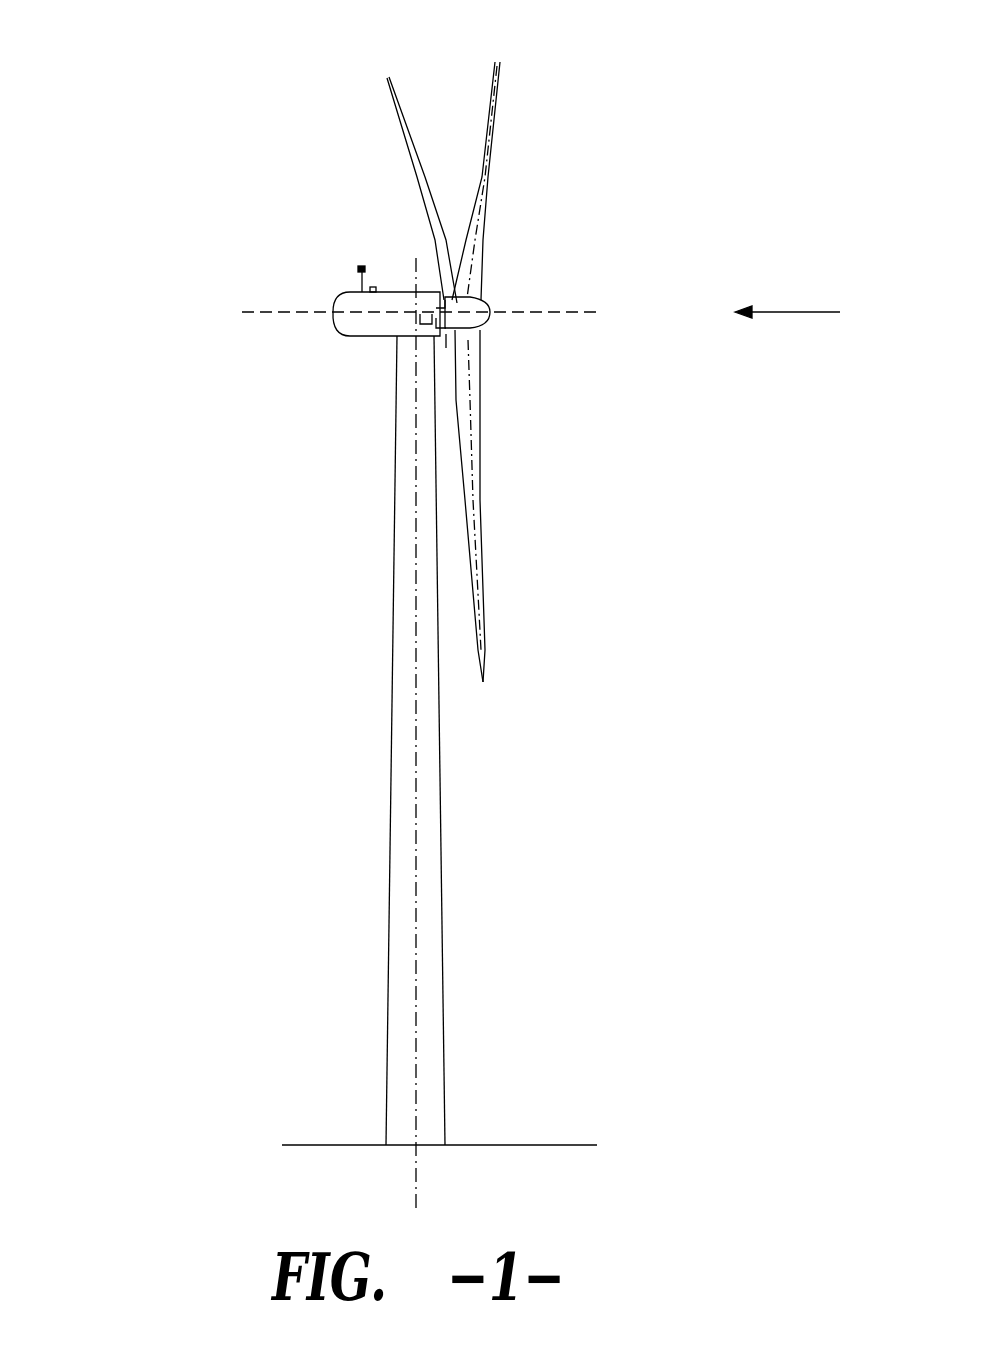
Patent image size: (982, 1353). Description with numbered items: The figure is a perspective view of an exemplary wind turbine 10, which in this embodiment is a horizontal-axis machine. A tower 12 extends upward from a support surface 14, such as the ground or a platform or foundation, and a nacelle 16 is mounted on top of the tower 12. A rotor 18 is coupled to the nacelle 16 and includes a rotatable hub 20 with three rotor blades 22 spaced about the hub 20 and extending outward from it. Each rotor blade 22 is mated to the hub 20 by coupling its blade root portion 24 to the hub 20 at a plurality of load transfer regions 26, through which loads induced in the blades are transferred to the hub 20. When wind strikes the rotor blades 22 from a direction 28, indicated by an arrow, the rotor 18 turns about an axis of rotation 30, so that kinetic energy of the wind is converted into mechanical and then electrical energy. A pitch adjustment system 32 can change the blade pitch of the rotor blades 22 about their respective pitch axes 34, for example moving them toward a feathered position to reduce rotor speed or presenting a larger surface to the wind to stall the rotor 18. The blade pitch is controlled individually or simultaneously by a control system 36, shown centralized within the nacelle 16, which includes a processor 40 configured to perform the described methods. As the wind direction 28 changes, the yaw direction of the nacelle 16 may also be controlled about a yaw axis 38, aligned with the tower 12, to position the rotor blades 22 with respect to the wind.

The wind turbine 10 is at (158, 84).
The tower 12 is at (390, 896).
The support surface 14 is at (342, 1143).
The nacelle 16 is at (372, 336).
The rotor 18 is at (505, 208).
The rotatable hub 20 is at (490, 304).
The rotor blade 22 is at (412, 155).
The blade root portion 24 is at (478, 420).
The load transfer region 26 is at (470, 336).
The direction 28 is at (812, 311).
The axis of rotation 30 is at (560, 318).
The pitch adjustment system 32 is at (466, 365).
The pitch axis 34 is at (386, 78).
The control system 36 is at (410, 346).
The yaw axis 38 is at (418, 788).
The processor 40 is at (432, 264).